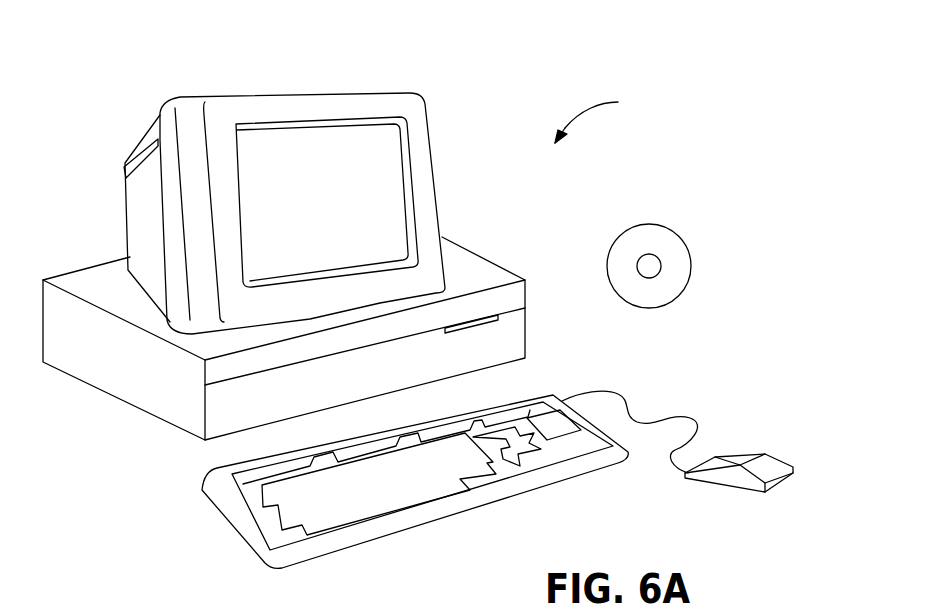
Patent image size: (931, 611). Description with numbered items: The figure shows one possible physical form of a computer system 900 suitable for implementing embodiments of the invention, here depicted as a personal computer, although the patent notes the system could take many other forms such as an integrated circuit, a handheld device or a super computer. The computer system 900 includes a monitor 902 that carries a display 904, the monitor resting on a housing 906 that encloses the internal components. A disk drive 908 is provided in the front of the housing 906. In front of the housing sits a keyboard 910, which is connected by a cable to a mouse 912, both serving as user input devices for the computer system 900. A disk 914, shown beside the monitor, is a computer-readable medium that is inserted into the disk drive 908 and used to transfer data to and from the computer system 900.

The computer system 900 is at (605, 115).
The monitor 902 is at (437, 187).
The display 904 is at (393, 157).
The housing 906 is at (138, 302).
The disk drive 908 is at (502, 315).
The keyboard 910 is at (510, 498).
The mouse 912 is at (770, 465).
The disk 914 is at (665, 225).